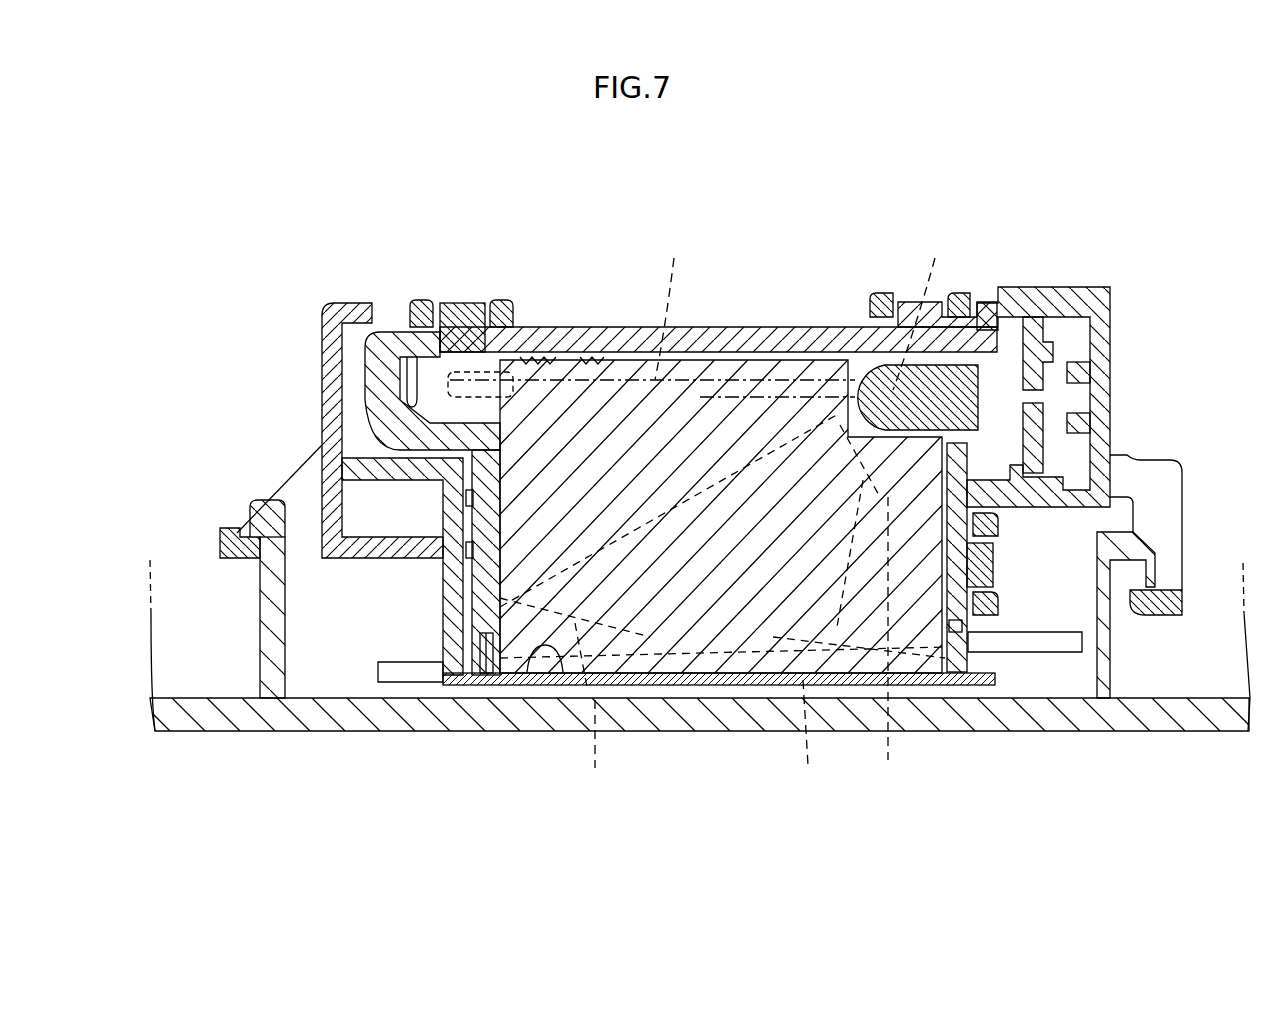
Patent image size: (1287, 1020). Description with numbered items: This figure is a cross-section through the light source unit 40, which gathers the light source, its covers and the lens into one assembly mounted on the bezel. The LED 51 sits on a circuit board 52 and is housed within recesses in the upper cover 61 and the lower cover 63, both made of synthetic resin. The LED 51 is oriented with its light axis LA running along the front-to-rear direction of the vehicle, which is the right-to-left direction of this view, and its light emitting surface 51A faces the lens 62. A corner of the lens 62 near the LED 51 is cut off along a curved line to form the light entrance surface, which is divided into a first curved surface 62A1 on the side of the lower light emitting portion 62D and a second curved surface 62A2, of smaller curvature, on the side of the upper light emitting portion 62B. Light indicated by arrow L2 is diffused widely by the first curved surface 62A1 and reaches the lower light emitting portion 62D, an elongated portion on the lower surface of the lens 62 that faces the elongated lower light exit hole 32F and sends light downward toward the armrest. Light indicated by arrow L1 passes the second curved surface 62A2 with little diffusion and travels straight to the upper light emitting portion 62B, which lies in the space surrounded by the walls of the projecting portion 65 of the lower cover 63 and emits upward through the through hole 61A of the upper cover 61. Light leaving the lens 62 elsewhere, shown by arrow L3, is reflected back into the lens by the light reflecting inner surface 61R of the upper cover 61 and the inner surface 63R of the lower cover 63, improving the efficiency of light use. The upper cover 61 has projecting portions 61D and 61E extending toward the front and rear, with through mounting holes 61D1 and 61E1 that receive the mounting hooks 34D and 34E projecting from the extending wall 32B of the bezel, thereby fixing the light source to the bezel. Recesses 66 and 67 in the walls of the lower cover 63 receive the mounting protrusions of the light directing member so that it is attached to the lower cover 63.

The extending wall 32B is at (1173, 713).
The lower light exit hole 32F is at (937, 712).
The mounting hook 34D is at (263, 633).
The mounting hook 34E is at (1107, 567).
The light source unit 40 is at (1100, 283).
The LED 51 is at (862, 412).
The light emitting surface 51A is at (848, 405).
The circuit board 52 is at (1032, 318).
The upper cover 61 is at (327, 367).
The through hole 61A is at (480, 370).
The projecting portion 61D is at (233, 523).
The mounting hole 61D1 is at (268, 517).
The projecting portion 61E is at (1182, 600).
The mounting hole 61E1 is at (1148, 587).
The inner surface 61R is at (527, 660).
The lens 62 is at (733, 363).
The first curved surface 62A1 is at (980, 413).
The second curved surface 62A2 is at (863, 352).
The upper light emitting portion 62B is at (432, 365).
The lower light emitting portion 62D is at (712, 690).
The lower cover 63 is at (590, 347).
The inner surface 63R is at (505, 497).
The projecting portion 65 is at (437, 377).
The recess 66 is at (483, 662).
The recess 67 is at (953, 630).
The arrow L1 (light beam) L1 is at (670, 306).
The arrow L2 (light beam) L2 is at (890, 640).
The arrow L3 (light beam) L3 is at (594, 745).
The light axis LA is at (922, 310).